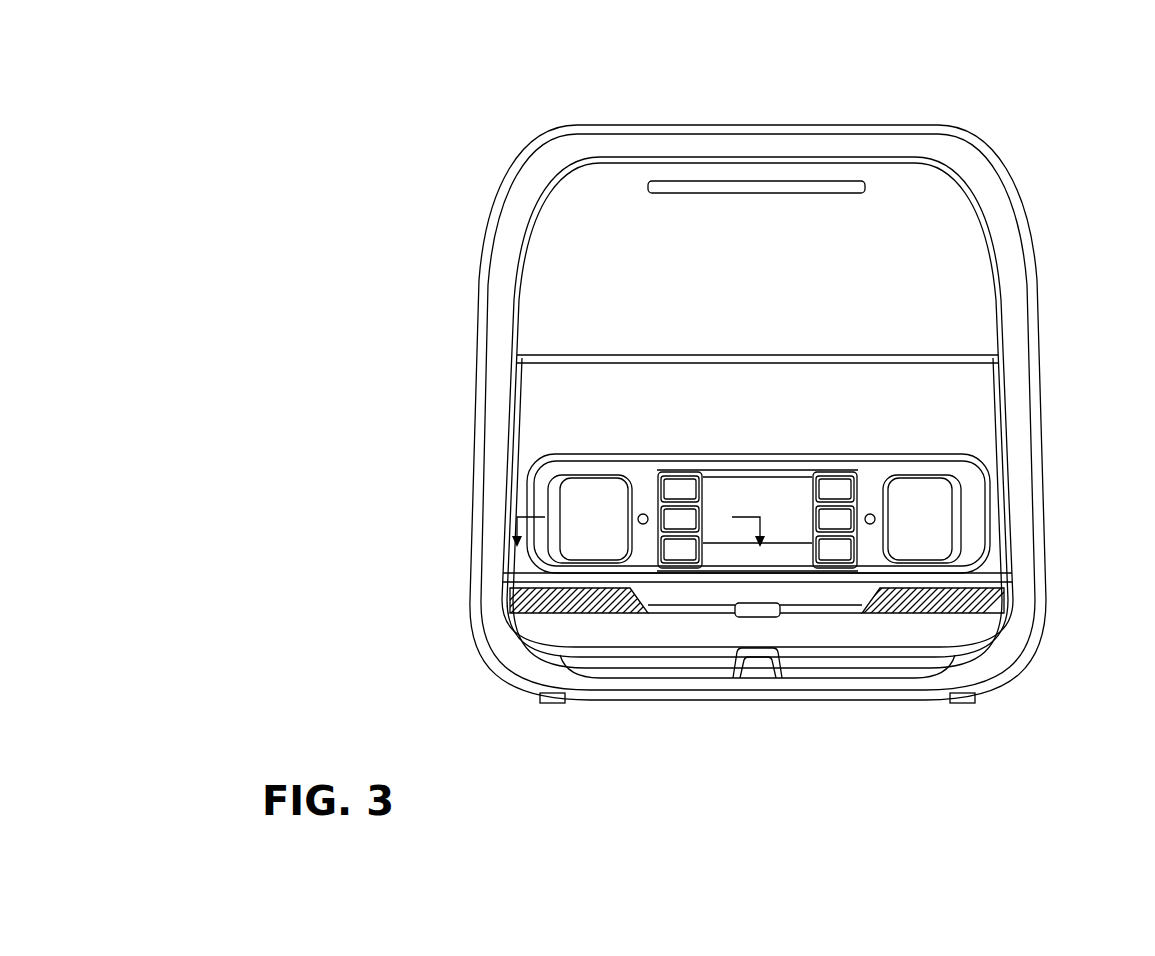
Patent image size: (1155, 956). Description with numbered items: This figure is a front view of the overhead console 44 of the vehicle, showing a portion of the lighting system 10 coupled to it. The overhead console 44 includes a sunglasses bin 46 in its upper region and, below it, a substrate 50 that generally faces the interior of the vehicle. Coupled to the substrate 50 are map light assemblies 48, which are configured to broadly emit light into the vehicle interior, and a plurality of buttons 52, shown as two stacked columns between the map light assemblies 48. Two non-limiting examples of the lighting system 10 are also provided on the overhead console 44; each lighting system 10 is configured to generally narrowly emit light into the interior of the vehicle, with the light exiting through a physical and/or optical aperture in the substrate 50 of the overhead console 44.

The overhead console 44 is at (975, 108).
The sunglasses bin 46 is at (736, 296).
The substrate 50 is at (640, 477).
The lighting system 10 is at (636, 506).
The map light assemblies 48 is at (592, 538).
The buttons 52 is at (687, 515).